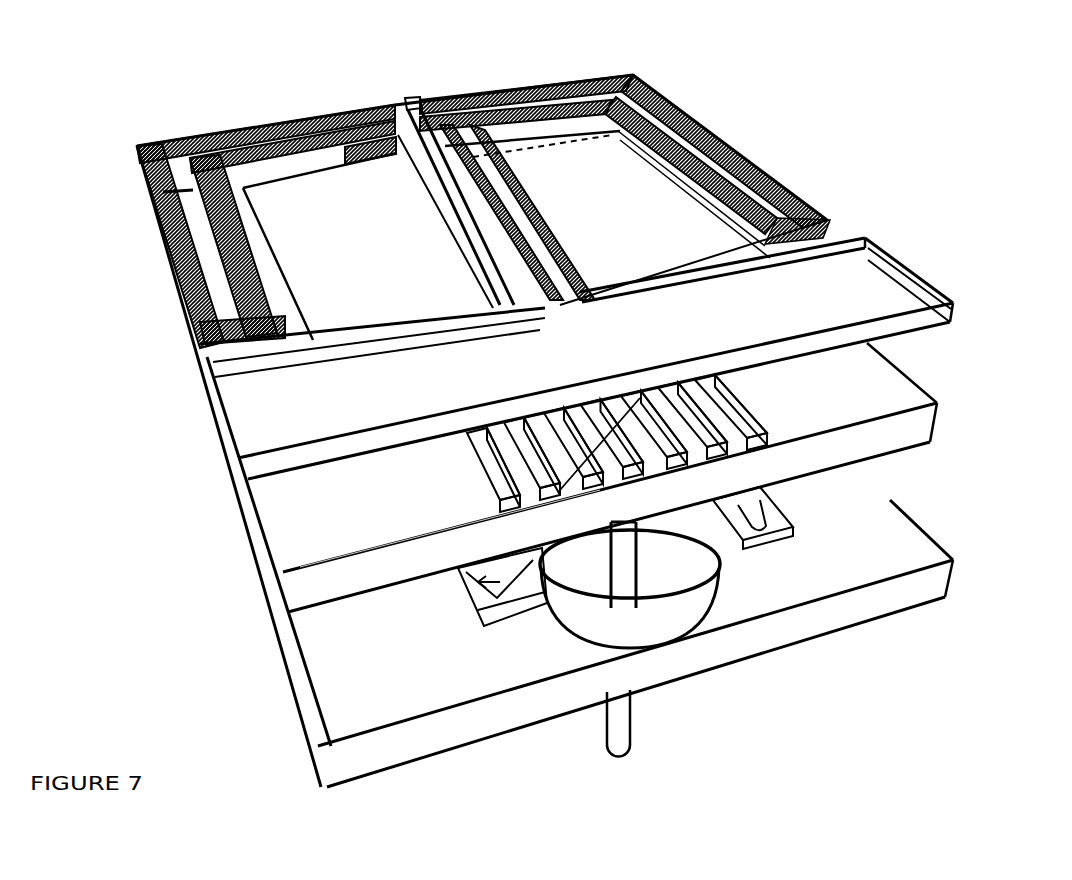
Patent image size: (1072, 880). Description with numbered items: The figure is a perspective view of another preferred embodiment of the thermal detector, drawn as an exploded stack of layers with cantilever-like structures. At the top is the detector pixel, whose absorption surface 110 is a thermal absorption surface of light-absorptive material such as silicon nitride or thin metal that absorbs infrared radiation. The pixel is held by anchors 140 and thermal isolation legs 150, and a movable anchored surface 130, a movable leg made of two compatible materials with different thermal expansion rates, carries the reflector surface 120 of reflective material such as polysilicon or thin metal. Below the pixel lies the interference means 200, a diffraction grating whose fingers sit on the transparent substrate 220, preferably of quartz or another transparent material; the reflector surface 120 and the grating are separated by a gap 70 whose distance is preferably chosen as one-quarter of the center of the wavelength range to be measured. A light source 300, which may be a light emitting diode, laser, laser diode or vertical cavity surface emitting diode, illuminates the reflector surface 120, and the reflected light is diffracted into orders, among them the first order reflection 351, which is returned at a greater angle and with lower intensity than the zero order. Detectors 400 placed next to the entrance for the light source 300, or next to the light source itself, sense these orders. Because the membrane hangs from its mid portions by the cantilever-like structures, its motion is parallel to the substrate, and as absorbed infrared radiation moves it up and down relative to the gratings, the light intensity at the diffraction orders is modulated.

The gap 70 is at (908, 358).
The absorption surface 110 is at (135, 147).
The reflector surface 120 is at (440, 368).
The movable anchored surface 130 is at (523, 255).
The anchors 140 is at (267, 123).
The thermal isolation legs 150 is at (745, 150).
The interference means 200 is at (770, 410).
The transparent substrate 220 is at (385, 500).
The light source 300 is at (628, 715).
The first order reflection 351 is at (740, 505).
The detector 400 is at (517, 592).